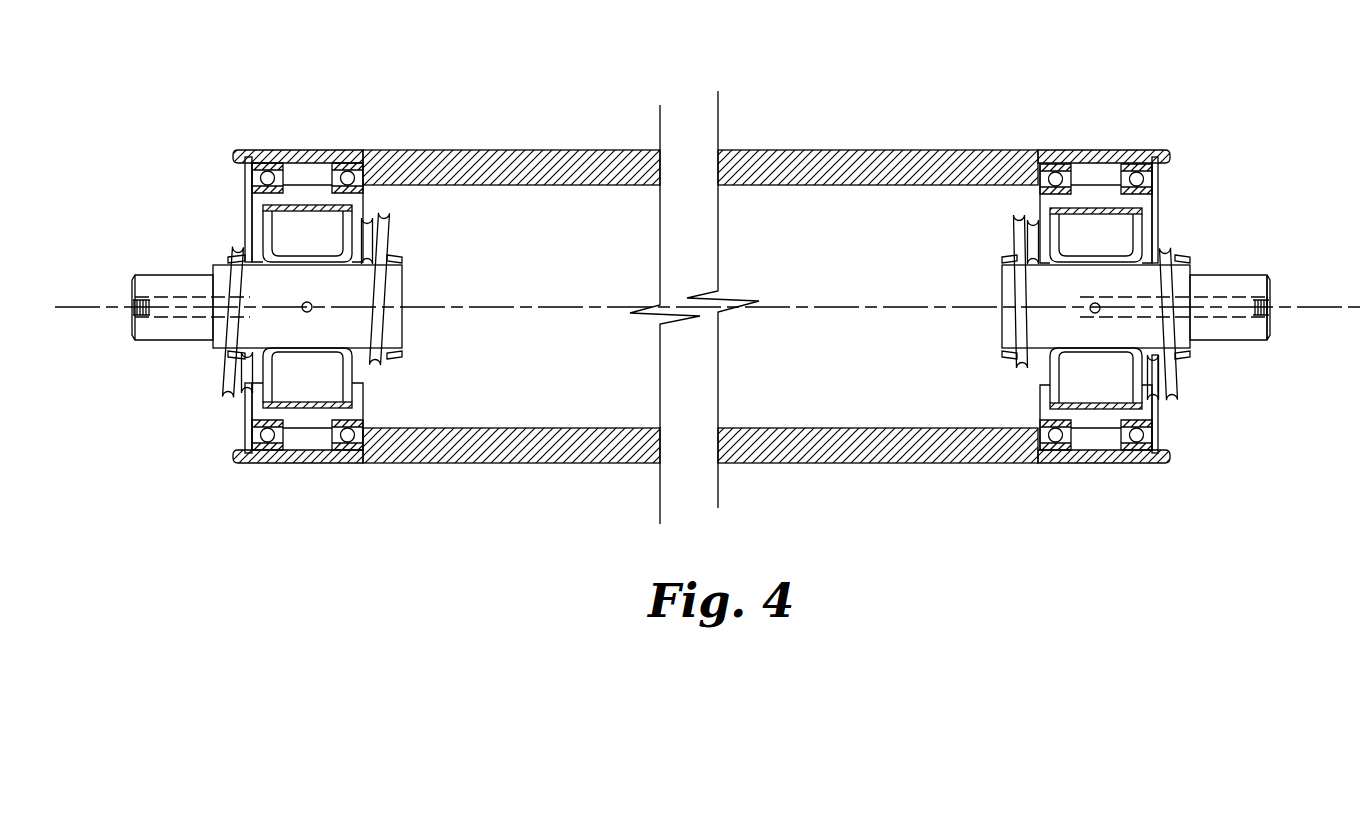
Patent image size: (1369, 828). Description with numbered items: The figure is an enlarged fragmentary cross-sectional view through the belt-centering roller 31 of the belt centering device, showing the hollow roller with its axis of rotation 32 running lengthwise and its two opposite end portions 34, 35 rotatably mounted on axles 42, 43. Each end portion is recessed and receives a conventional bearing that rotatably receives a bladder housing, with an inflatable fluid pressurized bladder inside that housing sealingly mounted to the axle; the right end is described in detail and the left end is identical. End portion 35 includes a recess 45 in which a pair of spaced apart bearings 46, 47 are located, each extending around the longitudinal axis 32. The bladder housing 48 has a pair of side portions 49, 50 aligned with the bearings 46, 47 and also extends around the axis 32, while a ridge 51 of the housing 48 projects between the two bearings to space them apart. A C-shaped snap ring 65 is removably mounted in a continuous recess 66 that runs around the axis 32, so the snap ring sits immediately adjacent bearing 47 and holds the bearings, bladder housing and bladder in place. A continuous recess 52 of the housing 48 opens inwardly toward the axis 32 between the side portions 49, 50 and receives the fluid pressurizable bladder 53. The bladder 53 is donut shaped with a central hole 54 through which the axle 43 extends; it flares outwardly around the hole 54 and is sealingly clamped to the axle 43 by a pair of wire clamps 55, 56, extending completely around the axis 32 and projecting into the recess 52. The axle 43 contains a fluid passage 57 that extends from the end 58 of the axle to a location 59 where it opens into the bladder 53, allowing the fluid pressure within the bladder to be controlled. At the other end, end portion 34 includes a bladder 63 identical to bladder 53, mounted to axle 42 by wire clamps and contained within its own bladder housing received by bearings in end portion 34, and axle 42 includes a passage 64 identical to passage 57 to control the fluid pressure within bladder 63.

The belt-centering roller 31 is at (482, 150).
The axis of rotation 32 is at (520, 302).
The end portion 34 is at (289, 150).
The end portion 35 is at (1115, 150).
The axle 42 is at (155, 273).
The axle 43 is at (1250, 277).
The recess 45 is at (1050, 152).
The bearing 46 is at (1038, 195).
The bearing 47 is at (1160, 188).
The bladder housing 48 is at (1098, 203).
The side portion 49 is at (1030, 222).
The side portion 50 is at (1147, 221).
The ridge 51 is at (1086, 190).
The continuous recess 52 is at (1087, 214).
The fluid pressurizable bladder 53 is at (1160, 244).
The central hole 54 is at (978, 272).
The wire clamp 55 is at (1020, 374).
The wire clamp 56 is at (1178, 382).
The fluid passage 57 is at (1277, 307).
The end of the axle 58 is at (1272, 328).
The location 59 is at (1098, 314).
The bladder 63 is at (306, 205).
The passage 64 is at (128, 306).
The snap ring 65 is at (1165, 452).
The continuous recess 66 is at (1160, 168).